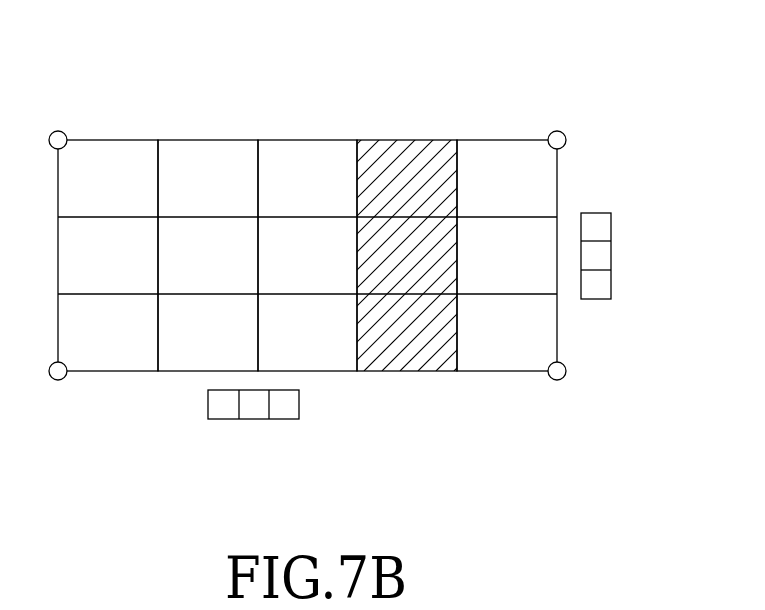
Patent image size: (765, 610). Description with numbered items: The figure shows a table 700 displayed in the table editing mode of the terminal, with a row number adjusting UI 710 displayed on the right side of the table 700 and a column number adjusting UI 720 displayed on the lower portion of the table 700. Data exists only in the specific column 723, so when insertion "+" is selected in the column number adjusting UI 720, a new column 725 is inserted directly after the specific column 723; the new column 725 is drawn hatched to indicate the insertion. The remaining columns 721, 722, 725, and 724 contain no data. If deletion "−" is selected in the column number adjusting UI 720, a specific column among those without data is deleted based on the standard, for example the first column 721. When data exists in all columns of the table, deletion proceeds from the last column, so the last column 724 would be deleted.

The table 700 is at (380, 240).
The row number adjusting UI 710 is at (611, 253).
The column number adjusting UI 720 is at (254, 419).
The first column 721 is at (111, 372).
The column 722 is at (186, 372).
The specific column 723 is at (333, 372).
The last column 724 is at (517, 372).
The new column 725 is at (417, 372).